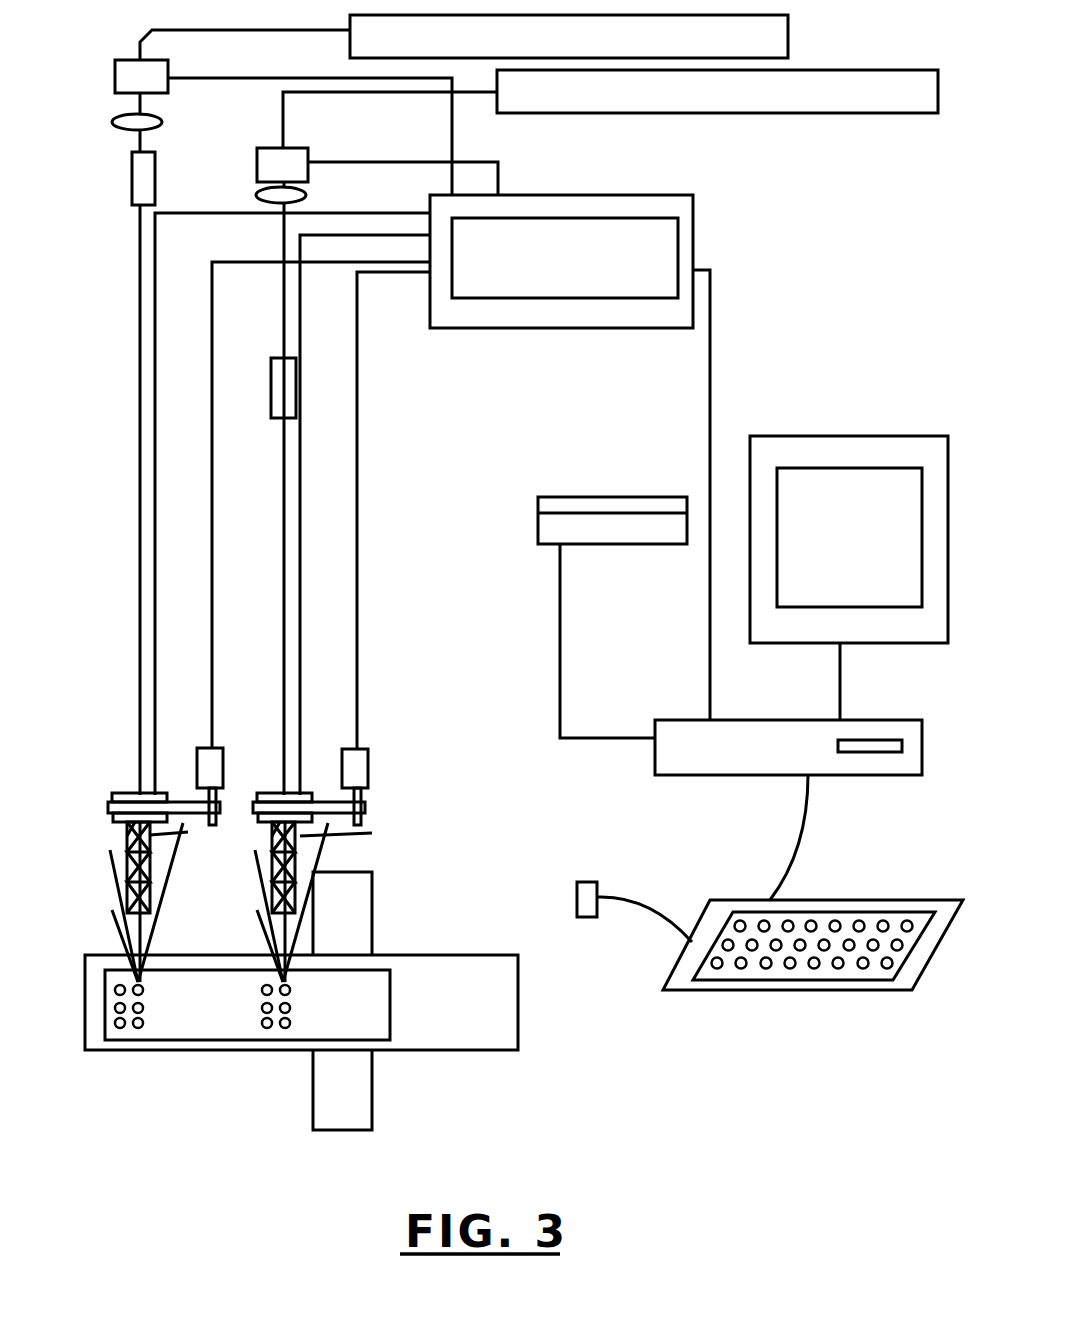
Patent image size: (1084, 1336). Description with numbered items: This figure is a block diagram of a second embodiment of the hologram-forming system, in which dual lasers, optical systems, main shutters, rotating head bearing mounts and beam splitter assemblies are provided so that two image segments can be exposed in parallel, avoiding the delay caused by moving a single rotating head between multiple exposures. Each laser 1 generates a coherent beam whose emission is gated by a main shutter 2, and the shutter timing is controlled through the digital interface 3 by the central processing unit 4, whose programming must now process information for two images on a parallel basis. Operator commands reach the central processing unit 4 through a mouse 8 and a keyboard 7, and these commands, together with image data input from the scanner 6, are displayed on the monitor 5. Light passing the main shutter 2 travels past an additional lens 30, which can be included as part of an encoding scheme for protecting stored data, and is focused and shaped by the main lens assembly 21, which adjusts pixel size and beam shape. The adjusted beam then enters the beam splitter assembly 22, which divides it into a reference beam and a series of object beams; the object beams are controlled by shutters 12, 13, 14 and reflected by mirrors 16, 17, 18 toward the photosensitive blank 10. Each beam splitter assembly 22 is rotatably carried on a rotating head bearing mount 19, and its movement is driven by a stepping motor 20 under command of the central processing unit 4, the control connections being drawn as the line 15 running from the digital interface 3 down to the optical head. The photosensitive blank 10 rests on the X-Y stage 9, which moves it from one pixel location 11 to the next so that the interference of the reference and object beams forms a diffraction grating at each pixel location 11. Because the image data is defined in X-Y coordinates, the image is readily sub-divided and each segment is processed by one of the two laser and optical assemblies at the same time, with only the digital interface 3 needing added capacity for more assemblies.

The laser 1 is at (788, 38).
The main shutter 2 is at (132, 72).
The digital interface 3 is at (595, 228).
The central processing unit 4 is at (907, 758).
The monitor 5 is at (870, 435).
The scanner 6 is at (570, 495).
The keyboard 7 is at (927, 947).
The mouse 8 is at (583, 895).
The X-Y stage 9 is at (372, 927).
The photosensitive blank 10 is at (365, 1018).
The pixel location 11 is at (265, 1025).
The shutter 12 is at (125, 933).
The shutter 13 is at (122, 880).
The shutter 14 is at (183, 826).
The control cable 15 is at (213, 573).
The reflecting mirror 16 is at (117, 857).
The reflecting mirror 17 is at (118, 913).
The reflecting mirror 18 is at (183, 832).
The rotating head bearing mount 19 is at (113, 800).
The stepping motor 20 is at (213, 762).
The main lens assembly 21 is at (150, 180).
The beam splitter assembly 22 is at (127, 835).
The additional lens 30 is at (162, 123).